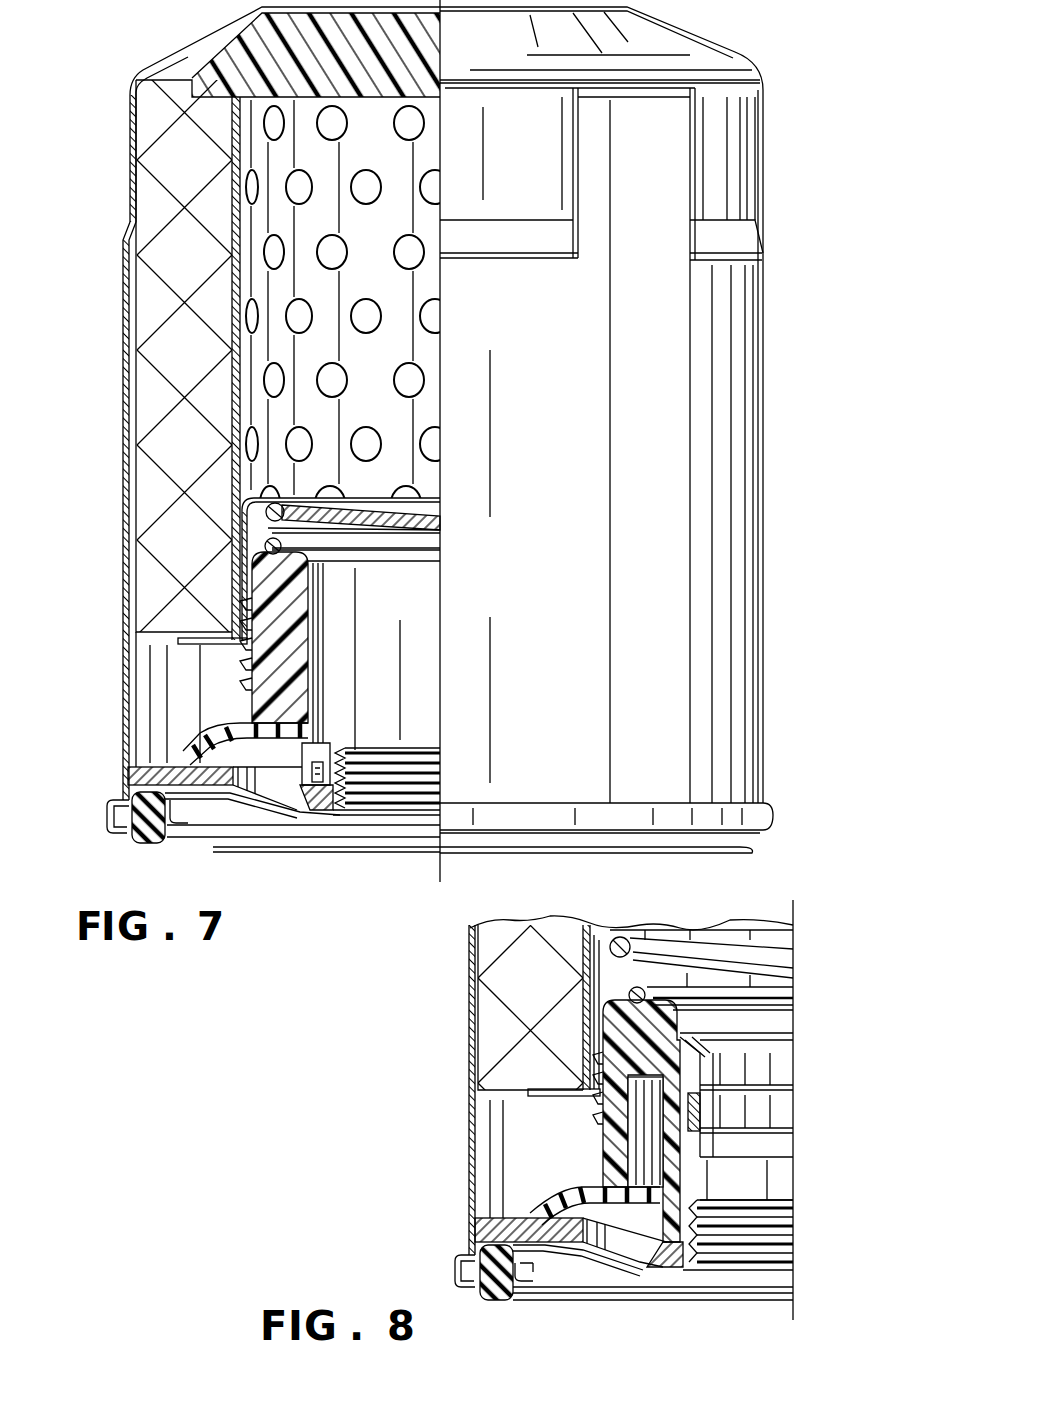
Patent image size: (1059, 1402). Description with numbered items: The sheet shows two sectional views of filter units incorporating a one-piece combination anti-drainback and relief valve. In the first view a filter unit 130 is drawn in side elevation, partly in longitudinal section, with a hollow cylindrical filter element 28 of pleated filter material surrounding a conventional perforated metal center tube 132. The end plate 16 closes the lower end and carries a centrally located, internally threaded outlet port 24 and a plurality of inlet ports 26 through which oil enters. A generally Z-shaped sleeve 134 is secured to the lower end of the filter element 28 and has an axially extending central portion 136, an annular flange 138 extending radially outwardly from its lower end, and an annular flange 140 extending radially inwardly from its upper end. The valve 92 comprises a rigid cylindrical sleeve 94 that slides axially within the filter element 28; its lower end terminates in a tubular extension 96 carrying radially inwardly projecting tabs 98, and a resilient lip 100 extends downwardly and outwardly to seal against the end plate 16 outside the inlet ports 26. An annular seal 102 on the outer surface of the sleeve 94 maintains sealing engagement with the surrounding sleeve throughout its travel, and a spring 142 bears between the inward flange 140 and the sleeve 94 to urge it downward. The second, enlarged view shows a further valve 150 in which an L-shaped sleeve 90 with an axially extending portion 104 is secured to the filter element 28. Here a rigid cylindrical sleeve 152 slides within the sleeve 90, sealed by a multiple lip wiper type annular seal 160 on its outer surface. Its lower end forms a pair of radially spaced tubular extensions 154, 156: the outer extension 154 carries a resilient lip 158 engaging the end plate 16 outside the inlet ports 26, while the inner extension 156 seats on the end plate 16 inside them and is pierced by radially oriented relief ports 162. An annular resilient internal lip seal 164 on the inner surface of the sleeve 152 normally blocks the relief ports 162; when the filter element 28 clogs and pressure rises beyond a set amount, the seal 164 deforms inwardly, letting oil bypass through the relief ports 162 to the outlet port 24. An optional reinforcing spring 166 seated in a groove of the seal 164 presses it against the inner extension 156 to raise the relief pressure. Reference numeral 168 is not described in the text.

In FIG. 7, the end plate 16 is at (128, 781).
In FIG. 7, the outlet port 24 is at (410, 745).
In FIG. 8, the outlet port 24 is at (768, 1200).
In FIG. 7, the inlet ports 26 is at (240, 800).
In FIG. 8, the inlet ports 26 is at (592, 1253).
In FIG. 7, the filter element 28 is at (160, 338).
In FIG. 8, the filter element 28 is at (490, 950).
In FIG. 8, the L-shaped sleeve 90 is at (590, 1097).
In FIG. 7, the combination anti-drainback and relief valve 92 is at (301, 644).
In FIG. 7, the cylindrical sleeve 94 is at (310, 563).
In FIG. 7, the tubular extension 96 is at (331, 798).
In FIG. 7, the tabs 98 is at (317, 784).
In FIG. 7, the resilient lip 100 is at (183, 757).
In FIG. 7, the annular seal 102 is at (243, 662).
In FIG. 8, the axially extending portion 104 is at (590, 1028).
In FIG. 7, the filter unit 130 is at (770, 32).
In FIG. 7, the perforated metal center tube 132 is at (445, 336).
In FIG. 7, the Z-shaped sleeve 134 is at (301, 520).
In FIG. 7, the axially extending central portion 136 is at (236, 562).
In FIG. 7, the annular flange 138 is at (187, 643).
In FIG. 7, the annular flange 140 is at (258, 497).
In FIG. 7, the spring 142 is at (420, 520).
In FIG. 8, the one-piece combination anti-drainback and relief valve 150 is at (765, 1094).
In FIG. 8, the cylindrical sleeve 152 is at (607, 1062).
In FIG. 8, the outer tubular extension 154 is at (652, 1158).
In FIG. 8, the inner tubular extension 156 is at (650, 1262).
In FIG. 8, the resilient lip 158 is at (530, 1213).
In FIG. 8, the annular seal 160 is at (592, 1107).
In FIG. 8, the relief ports 162 is at (627, 1148).
In FIG. 8, the internal lip seal 164 is at (720, 1077).
In FIG. 8, the reinforcing spring 166 is at (693, 1097).
In FIG. 8, the annular wall 168 is at (697, 1117).